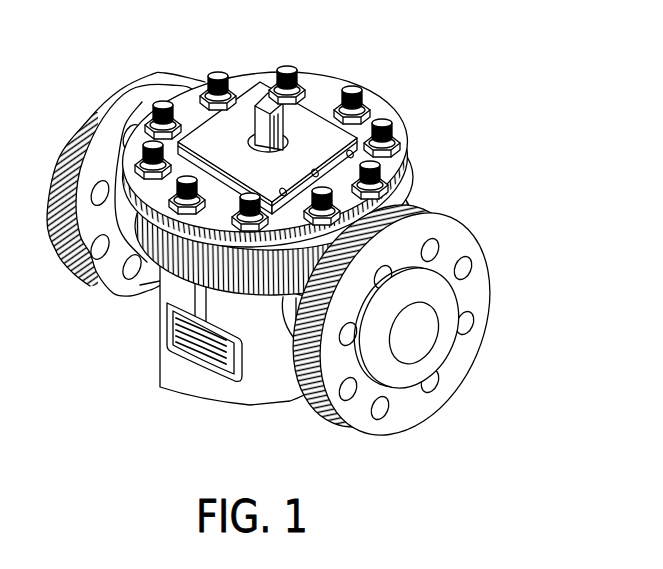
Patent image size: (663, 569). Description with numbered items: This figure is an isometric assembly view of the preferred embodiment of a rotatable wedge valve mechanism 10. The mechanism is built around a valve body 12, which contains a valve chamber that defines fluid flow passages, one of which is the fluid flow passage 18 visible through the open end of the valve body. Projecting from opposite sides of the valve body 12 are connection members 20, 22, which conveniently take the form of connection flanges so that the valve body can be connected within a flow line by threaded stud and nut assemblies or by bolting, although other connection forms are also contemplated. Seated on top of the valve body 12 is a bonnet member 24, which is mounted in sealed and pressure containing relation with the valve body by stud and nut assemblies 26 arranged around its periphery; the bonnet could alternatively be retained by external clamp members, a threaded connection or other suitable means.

The rotatable wedge valve mechanism 10 is at (436, 81).
The valve body 12 is at (265, 392).
The fluid flow passage 18 is at (418, 328).
The connection member 20 is at (163, 76).
The connection member 22 is at (476, 283).
The bonnet member 24 is at (394, 167).
The stud and nut assemblies 26 is at (352, 88).